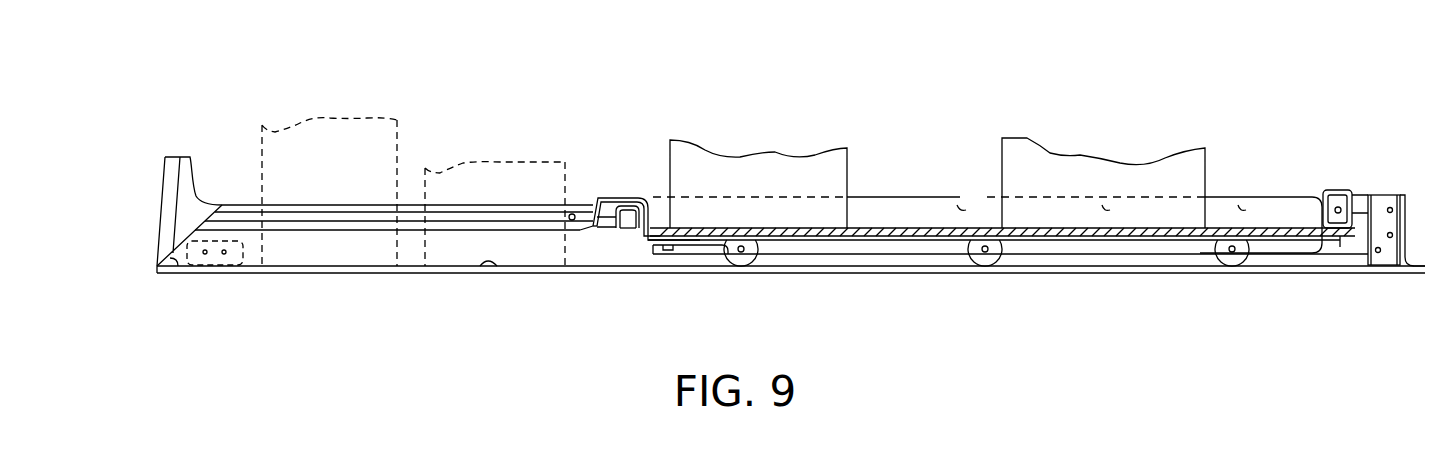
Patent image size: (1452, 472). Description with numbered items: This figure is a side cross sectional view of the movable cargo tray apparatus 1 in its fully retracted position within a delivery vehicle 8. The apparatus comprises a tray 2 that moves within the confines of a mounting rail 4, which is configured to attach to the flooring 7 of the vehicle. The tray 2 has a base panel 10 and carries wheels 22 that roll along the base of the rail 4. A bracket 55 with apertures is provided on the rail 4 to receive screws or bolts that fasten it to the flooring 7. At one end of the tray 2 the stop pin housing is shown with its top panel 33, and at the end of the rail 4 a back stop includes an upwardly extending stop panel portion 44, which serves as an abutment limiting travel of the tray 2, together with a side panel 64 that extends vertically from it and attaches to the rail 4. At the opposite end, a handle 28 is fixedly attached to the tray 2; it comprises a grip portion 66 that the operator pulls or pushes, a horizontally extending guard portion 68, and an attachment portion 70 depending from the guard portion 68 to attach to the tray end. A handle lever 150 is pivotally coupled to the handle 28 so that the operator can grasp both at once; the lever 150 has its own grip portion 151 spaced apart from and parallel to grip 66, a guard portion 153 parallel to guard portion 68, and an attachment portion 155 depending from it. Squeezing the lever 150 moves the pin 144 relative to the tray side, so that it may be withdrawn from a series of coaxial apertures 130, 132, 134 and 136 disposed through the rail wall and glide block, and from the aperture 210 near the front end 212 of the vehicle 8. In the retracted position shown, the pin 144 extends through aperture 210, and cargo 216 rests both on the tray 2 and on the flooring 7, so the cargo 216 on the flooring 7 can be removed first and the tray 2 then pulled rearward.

The movable cargo tray apparatus 1 is at (920, 133).
The tray 2 is at (1291, 168).
The mounting rail 4 is at (187, 291).
The flooring 7 is at (173, 264).
The delivery vehicle 8 is at (158, 165).
The base panel 10 is at (867, 228).
The wheels 22 is at (752, 265).
The handle 28 is at (599, 238).
The top panel 33 is at (1328, 189).
The stop panel portion 44 is at (1405, 225).
The bracket 55 is at (232, 262).
The side panel 64 is at (1388, 250).
The grip portion 66 is at (587, 230).
The guard portion 68 is at (613, 198).
The attachment portion 70 is at (655, 198).
The aperture 130 is at (1242, 204).
The aperture 132 is at (1106, 205).
The aperture 134 is at (961, 205).
The aperture 136 is at (573, 213).
The pin 144 is at (1340, 208).
The handle lever 150 is at (628, 220).
The grip portion 151 is at (597, 218).
The guard portion 153 is at (628, 206).
The attachment portion 155 is at (633, 250).
The aperture 210 is at (1346, 213).
The front end 212 is at (1440, 243).
The cargo 216 is at (364, 148).